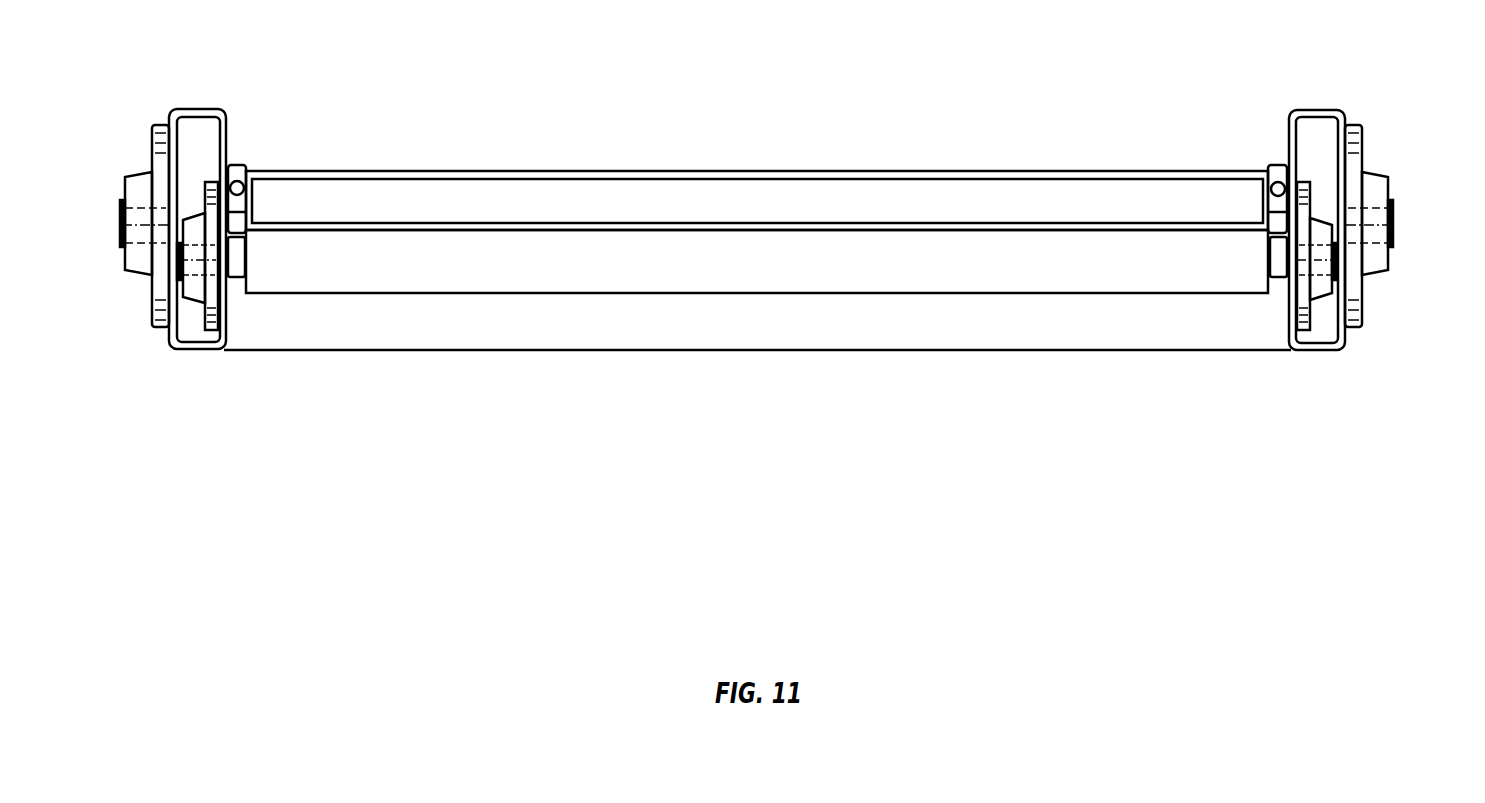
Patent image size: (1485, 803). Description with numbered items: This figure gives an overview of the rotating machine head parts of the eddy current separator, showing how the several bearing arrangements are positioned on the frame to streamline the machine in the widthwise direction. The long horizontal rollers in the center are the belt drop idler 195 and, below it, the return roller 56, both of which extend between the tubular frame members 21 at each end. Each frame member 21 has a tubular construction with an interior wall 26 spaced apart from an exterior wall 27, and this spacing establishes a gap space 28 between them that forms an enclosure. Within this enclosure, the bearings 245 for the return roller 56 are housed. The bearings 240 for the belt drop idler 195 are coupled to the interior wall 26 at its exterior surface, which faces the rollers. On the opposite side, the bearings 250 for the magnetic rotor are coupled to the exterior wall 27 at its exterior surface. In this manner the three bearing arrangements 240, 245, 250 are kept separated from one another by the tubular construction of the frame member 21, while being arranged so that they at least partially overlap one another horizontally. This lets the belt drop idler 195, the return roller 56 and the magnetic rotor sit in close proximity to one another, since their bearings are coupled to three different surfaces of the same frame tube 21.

The frame member 21 is at (1287, 282).
The interior wall 26 is at (1290, 118).
The exterior wall 27 is at (1345, 120).
The gap space 28 is at (1317, 115).
The return roller 56 is at (655, 257).
The belt drop idler 195 is at (433, 203).
The bearings 240 is at (1269, 170).
The bearings 245 is at (1318, 283).
The bearings 250 is at (1376, 258).